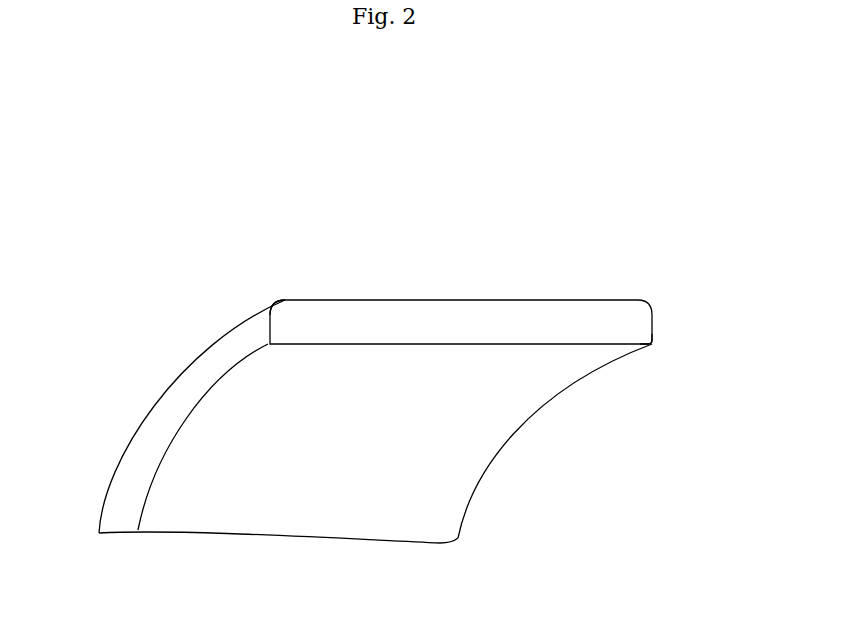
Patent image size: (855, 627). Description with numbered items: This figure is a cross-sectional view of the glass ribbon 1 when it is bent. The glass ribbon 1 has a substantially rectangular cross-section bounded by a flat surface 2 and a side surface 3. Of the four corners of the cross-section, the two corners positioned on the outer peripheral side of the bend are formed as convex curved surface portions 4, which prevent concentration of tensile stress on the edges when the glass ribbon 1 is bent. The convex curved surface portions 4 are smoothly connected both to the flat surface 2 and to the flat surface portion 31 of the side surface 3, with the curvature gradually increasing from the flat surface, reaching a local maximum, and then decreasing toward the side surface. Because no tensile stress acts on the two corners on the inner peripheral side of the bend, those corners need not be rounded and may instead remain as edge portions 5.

The glass ribbon 1 is at (162, 310).
The flat surface 2 is at (445, 300).
The side surface 3 is at (172, 408).
The flat surface portion 31 is at (268, 332).
The convex curved surface portion 4 is at (648, 303).
The edge portion 5 is at (655, 338).